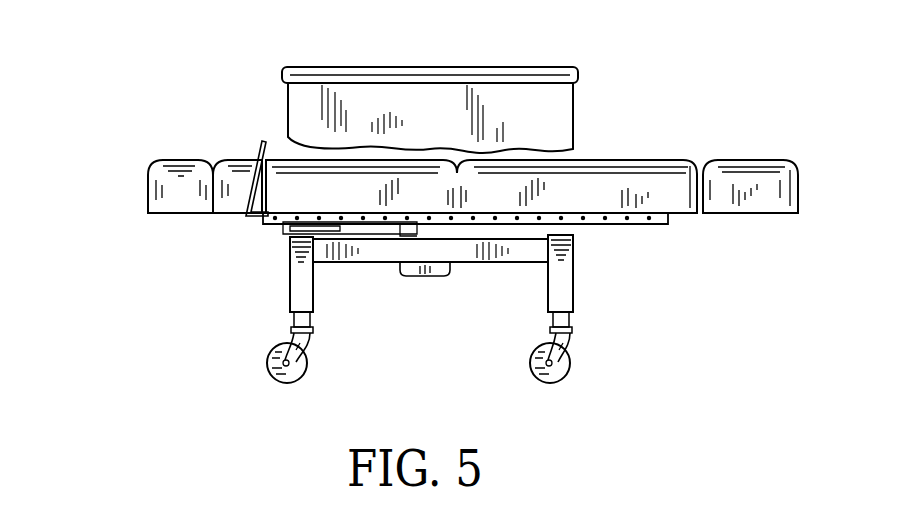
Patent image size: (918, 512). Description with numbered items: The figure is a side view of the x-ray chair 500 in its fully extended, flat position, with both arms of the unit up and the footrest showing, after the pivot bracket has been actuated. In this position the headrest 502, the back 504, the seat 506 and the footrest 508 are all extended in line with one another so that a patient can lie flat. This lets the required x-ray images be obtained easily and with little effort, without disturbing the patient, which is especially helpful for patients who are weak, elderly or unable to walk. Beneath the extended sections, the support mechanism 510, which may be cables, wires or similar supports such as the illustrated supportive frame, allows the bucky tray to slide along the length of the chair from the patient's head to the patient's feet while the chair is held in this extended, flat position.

The patient support apparatus 500 is at (243, 248).
The headrest 502 is at (163, 177).
The back 504 is at (238, 158).
The seat 506 is at (665, 193).
The footrest 508 is at (778, 163).
The support mechanism 510 is at (627, 222).